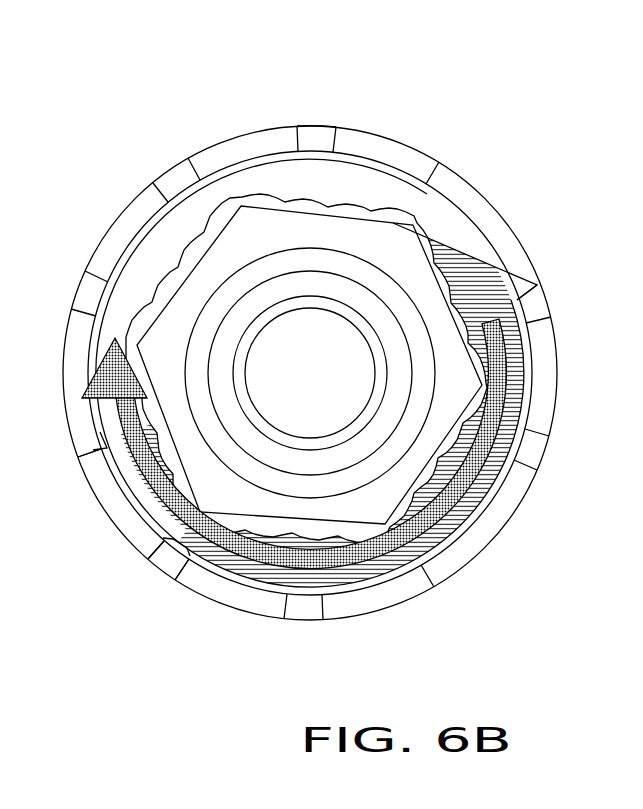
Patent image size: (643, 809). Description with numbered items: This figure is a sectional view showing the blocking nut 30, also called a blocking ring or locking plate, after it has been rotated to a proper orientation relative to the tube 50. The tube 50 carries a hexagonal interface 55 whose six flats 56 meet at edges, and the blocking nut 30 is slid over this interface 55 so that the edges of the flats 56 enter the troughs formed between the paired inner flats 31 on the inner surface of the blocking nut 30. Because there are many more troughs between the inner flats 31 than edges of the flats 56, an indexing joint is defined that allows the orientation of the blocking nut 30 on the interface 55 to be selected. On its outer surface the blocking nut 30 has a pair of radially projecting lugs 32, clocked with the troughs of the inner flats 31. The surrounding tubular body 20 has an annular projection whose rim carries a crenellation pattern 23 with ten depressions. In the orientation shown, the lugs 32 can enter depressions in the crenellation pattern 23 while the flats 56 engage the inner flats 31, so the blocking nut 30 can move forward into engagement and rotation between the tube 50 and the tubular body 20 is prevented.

The tubular body 20 is at (236, 131).
The crenellation pattern 23 is at (316, 131).
The blocking nut 30 is at (477, 222).
The inner flats 31 is at (187, 550).
The lugs 32 is at (517, 264).
The tube 50 is at (386, 443).
The interface 55 is at (296, 540).
The flats 56 is at (338, 536).